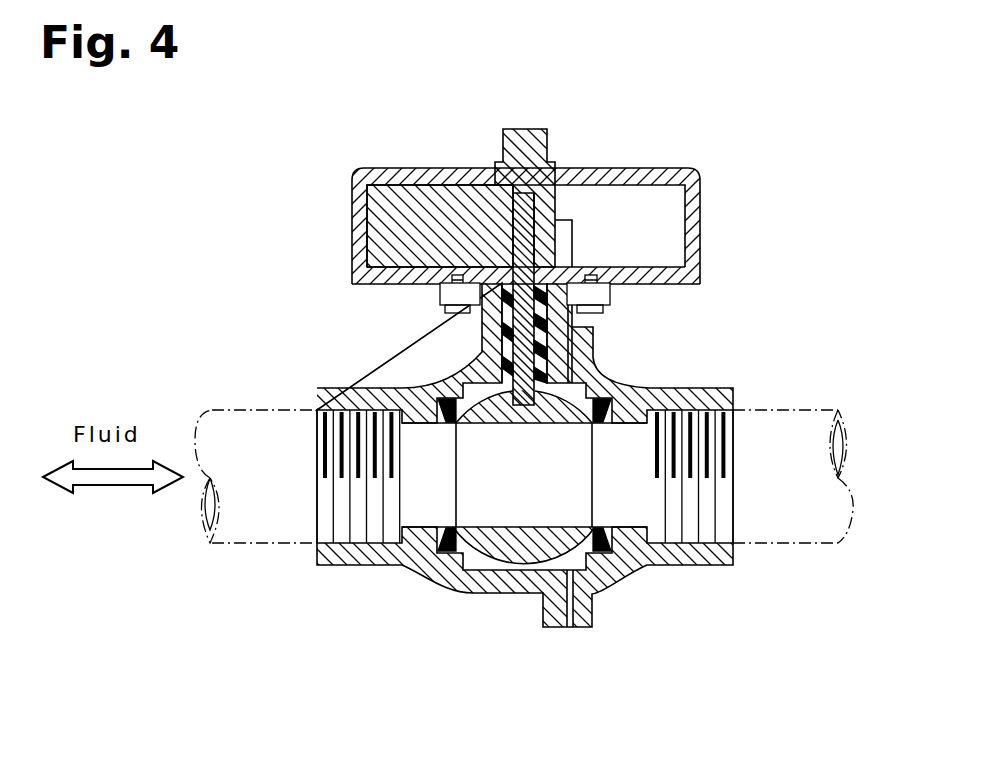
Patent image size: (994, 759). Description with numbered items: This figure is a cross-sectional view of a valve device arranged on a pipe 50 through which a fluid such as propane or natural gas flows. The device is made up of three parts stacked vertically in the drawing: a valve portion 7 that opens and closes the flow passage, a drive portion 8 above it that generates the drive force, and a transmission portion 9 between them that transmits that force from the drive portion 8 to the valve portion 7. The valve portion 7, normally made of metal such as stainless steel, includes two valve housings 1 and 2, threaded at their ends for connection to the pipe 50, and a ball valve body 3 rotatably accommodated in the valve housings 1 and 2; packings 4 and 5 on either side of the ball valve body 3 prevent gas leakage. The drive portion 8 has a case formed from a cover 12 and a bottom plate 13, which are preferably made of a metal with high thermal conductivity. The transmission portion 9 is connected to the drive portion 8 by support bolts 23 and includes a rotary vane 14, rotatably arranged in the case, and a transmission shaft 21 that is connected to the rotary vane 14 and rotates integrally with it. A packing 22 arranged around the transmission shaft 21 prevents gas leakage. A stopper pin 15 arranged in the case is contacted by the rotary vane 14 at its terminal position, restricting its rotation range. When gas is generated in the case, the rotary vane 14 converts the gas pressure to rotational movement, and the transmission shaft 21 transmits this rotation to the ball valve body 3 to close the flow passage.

The valve housing 1 is at (317, 425).
The valve housing 2 is at (733, 427).
The ball valve body 3 is at (593, 355).
The packing 4 is at (443, 397).
The packing 5 is at (604, 399).
The valve portion 7 is at (665, 583).
The drive portion 8 is at (724, 163).
The transmission portion 9 is at (646, 329).
The cover 12 is at (616, 168).
The bottom plate 13 is at (697, 276).
The rotary vane 14 is at (418, 188).
The stopper pin 15 is at (572, 232).
The transmission shaft 21 is at (531, 202).
The packing 22 is at (508, 330).
The support bolts 23 is at (440, 291).
The pipe 50 is at (263, 550).